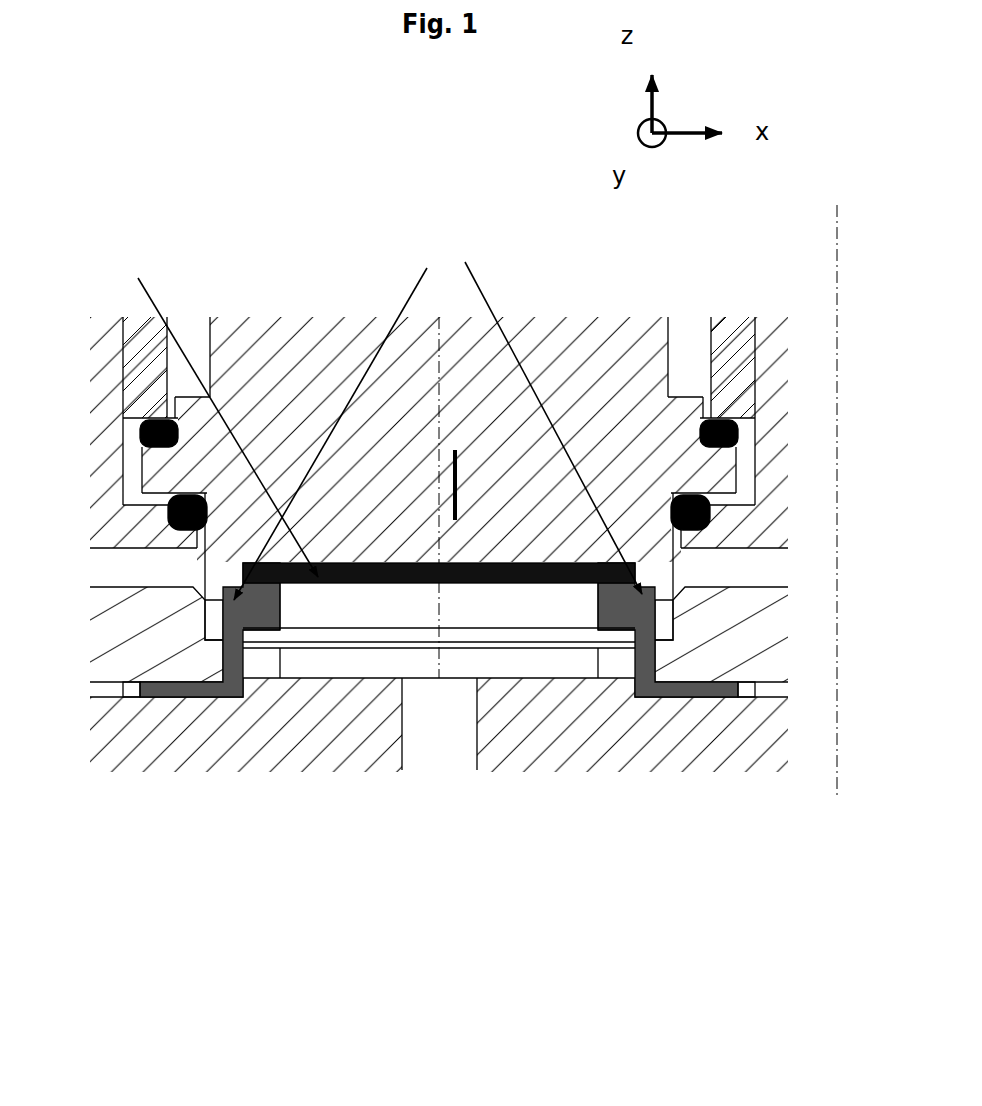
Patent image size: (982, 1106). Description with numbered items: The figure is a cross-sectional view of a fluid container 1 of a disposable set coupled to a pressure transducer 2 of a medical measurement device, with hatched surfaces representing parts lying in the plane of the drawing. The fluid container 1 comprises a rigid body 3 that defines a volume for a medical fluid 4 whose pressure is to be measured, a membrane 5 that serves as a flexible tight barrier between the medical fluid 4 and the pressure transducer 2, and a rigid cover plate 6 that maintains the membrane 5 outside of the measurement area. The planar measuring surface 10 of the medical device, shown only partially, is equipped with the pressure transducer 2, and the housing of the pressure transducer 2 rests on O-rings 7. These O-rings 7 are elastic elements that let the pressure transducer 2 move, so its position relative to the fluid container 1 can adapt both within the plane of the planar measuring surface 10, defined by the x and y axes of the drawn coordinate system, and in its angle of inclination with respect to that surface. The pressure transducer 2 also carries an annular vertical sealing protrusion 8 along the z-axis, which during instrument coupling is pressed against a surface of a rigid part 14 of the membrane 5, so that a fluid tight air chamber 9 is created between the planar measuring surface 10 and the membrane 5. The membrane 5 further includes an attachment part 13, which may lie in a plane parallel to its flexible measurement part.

The fluid container 1 is at (174, 778).
The pressure transducer 2 is at (303, 302).
The rigid body 3 is at (770, 728).
The medical fluid 4 is at (439, 631).
The membrane 5 is at (218, 394).
The rigid cover plate 6 is at (772, 618).
The O-rings 7 is at (686, 488).
The vertical sealing protrusion 8 is at (438, 407).
The fluid tight air chamber 9 is at (542, 560).
The planar measuring surface 10 is at (455, 558).
The attachment part 13 is at (717, 684).
The rigid part 14 is at (622, 605).